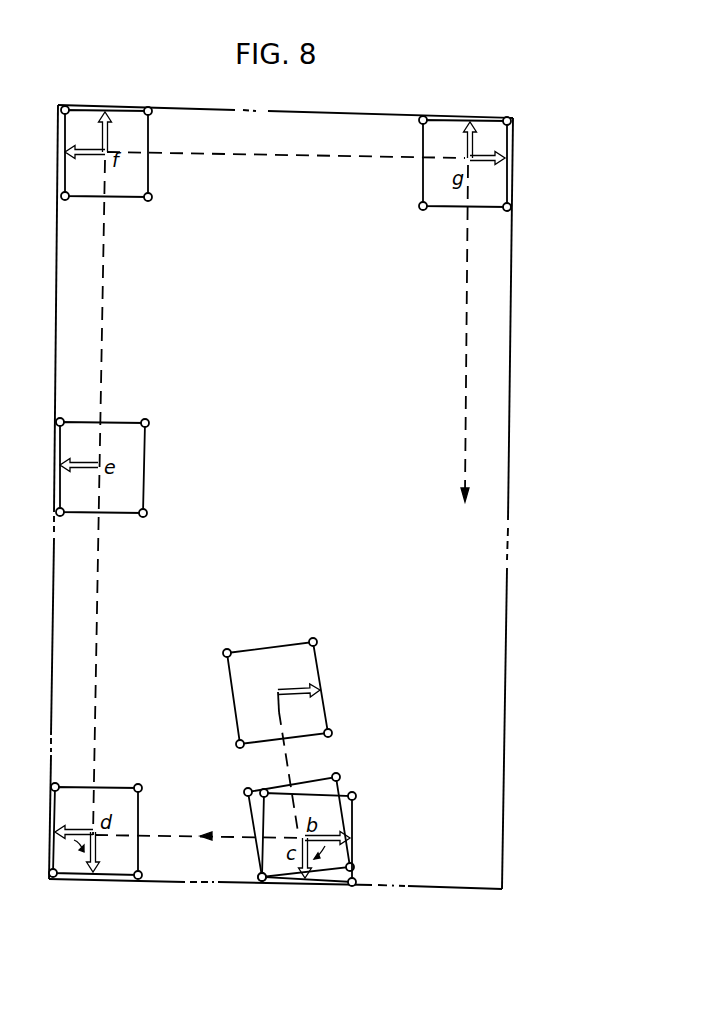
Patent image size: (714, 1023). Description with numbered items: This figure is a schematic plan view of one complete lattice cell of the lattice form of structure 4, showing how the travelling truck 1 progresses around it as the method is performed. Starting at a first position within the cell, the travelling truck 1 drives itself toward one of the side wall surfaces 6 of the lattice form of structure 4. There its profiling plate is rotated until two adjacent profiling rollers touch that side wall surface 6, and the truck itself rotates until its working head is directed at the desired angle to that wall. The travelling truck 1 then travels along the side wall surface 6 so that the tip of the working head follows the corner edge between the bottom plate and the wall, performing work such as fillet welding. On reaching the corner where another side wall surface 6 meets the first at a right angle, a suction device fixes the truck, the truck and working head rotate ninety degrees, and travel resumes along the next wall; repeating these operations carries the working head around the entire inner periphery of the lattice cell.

The travelling truck 1 is at (291, 662).
The lattice form of structure 4 is at (474, 605).
The side wall surface 6 is at (423, 890).